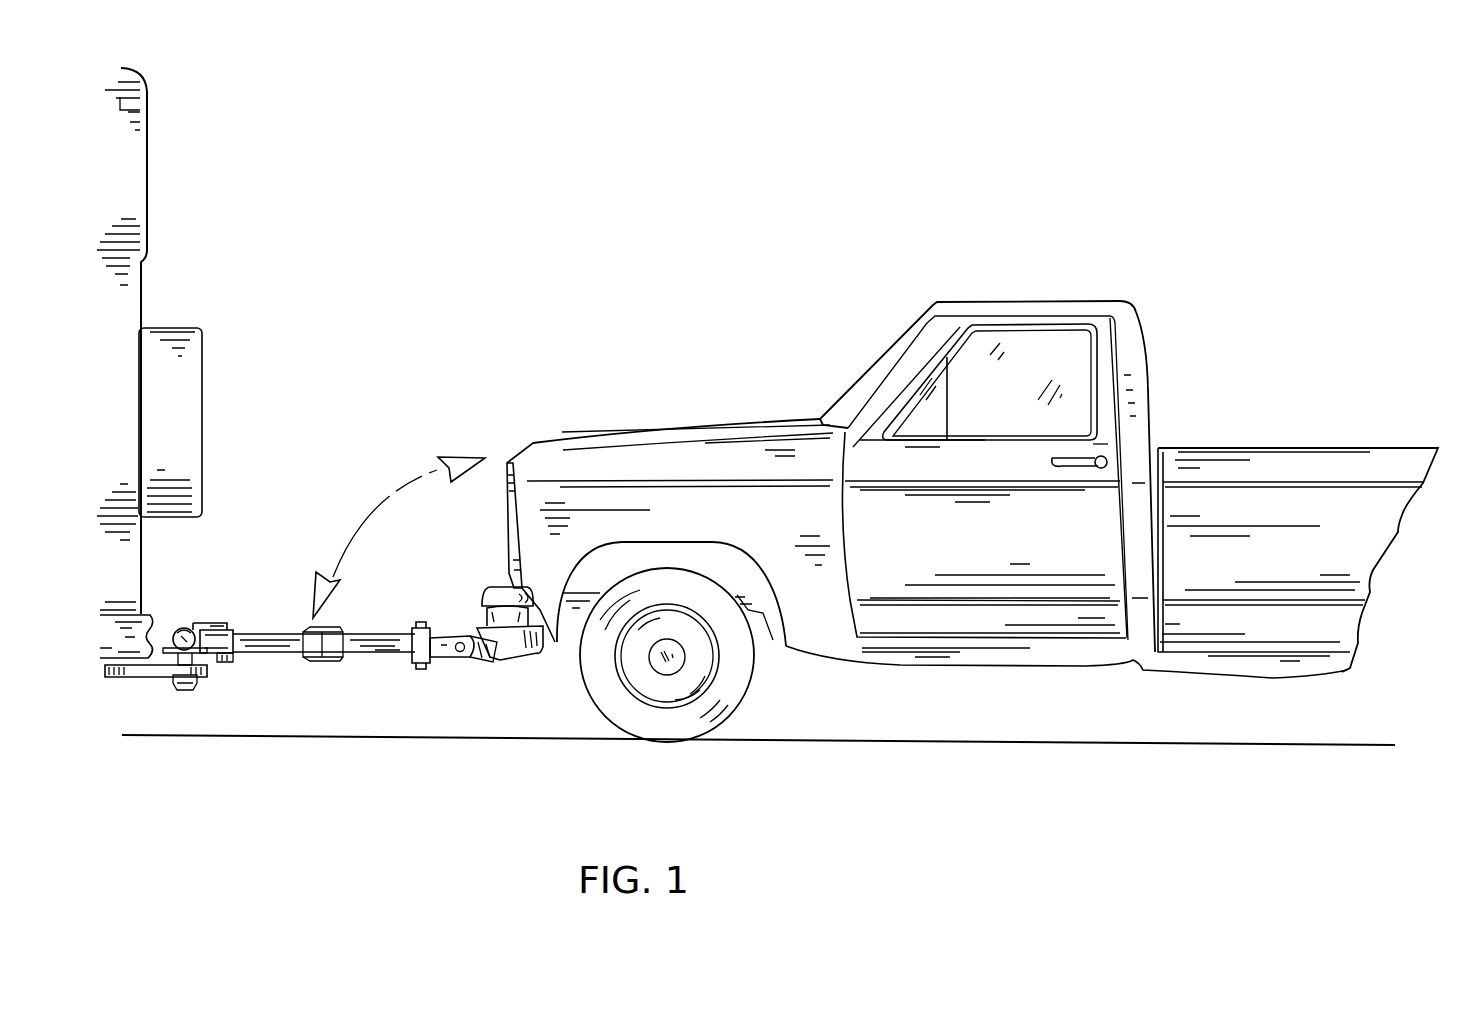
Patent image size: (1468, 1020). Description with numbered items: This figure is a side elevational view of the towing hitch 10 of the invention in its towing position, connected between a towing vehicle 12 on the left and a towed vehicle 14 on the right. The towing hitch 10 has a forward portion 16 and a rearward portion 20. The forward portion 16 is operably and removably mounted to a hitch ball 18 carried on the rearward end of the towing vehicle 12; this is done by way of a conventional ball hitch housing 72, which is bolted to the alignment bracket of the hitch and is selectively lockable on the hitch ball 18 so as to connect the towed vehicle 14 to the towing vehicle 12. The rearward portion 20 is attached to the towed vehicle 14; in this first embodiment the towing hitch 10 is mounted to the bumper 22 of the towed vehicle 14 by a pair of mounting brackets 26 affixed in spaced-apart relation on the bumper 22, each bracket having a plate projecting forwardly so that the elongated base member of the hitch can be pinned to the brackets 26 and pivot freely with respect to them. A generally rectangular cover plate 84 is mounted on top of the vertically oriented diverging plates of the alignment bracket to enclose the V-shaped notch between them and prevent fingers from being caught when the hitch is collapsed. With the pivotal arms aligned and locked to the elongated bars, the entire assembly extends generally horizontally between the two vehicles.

The towing hitch 10 is at (328, 480).
The towing vehicle 12 is at (132, 195).
The towed vehicle 14 is at (667, 436).
The forward portion 16 is at (210, 605).
The hitch ball 18 is at (172, 665).
The rearward portion 20 is at (460, 608).
The bumper 22 is at (517, 650).
The mounting brackets 26 is at (483, 660).
The ball hitch housing 72 is at (179, 628).
The cover plate 84 is at (393, 497).